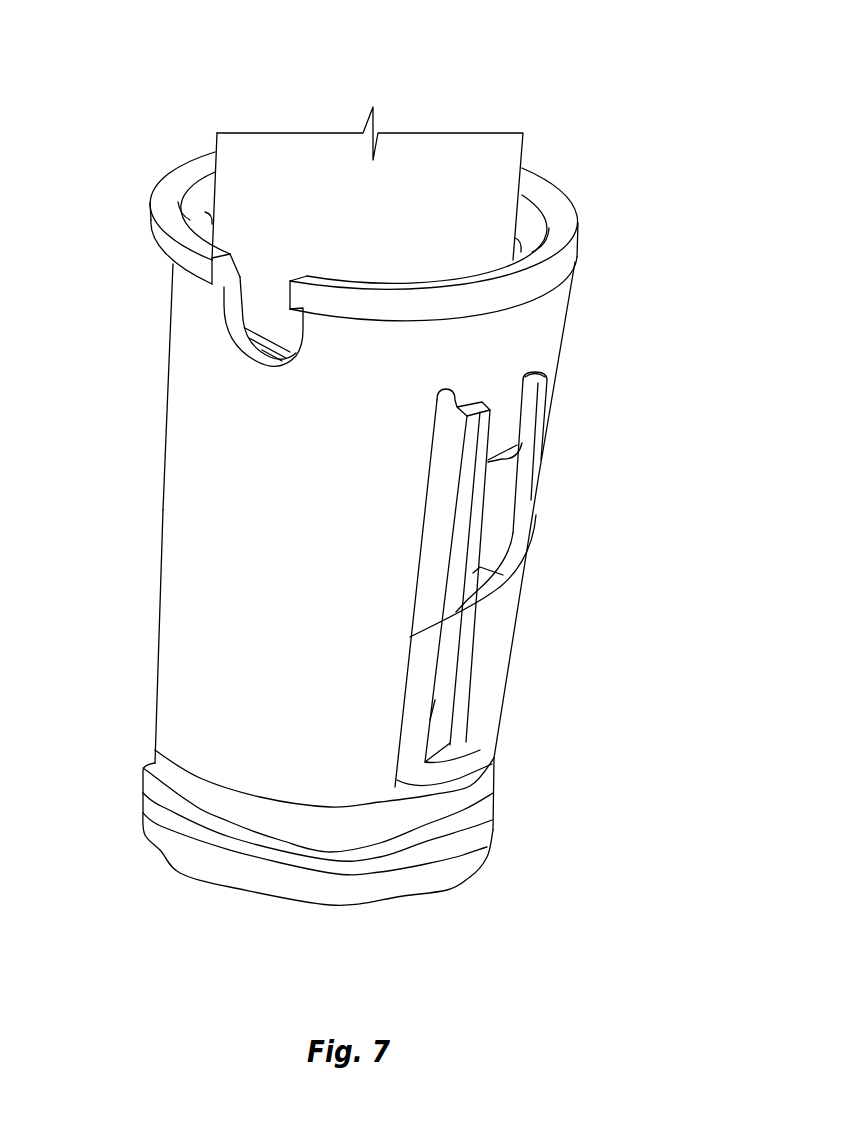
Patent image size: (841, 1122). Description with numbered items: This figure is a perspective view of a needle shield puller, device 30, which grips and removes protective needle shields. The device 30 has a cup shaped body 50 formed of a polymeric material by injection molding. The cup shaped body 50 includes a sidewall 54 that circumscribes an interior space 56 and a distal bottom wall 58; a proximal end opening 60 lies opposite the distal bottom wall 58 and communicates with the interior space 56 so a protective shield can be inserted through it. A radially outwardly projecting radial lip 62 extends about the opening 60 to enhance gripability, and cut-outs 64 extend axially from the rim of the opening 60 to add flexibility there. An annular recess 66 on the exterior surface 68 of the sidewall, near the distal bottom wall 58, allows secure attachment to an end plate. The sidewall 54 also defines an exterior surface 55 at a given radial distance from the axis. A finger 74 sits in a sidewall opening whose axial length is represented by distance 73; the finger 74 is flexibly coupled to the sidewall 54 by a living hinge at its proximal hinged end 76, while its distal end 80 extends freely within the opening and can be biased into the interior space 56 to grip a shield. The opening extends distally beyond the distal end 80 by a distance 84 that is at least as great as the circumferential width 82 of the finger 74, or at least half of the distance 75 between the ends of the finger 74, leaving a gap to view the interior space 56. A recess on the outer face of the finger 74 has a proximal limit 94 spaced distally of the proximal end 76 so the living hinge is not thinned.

The device 30 is at (628, 104).
The cup shaped body 50 is at (197, 490).
The sidewall 54 is at (170, 716).
The exterior surface 55 is at (187, 423).
The interior space 56 is at (463, 683).
The distal bottom wall 58 is at (180, 855).
The proximal end opening 60 is at (208, 199).
The radial lip 62 is at (158, 232).
The cut-outs 64 is at (232, 324).
The annular recess 66 is at (490, 813).
The exterior surface 68 is at (202, 643).
The axial length of opening 73 is at (437, 385).
The finger 74 is at (515, 515).
The distance between proximal end and distal end of finger 75 is at (410, 637).
The proximal hinged end 76 is at (502, 380).
The distal end 80 is at (447, 628).
The circumferential width 82 is at (533, 372).
The distance 84 is at (362, 642).
The proximal limit 94 is at (510, 460).